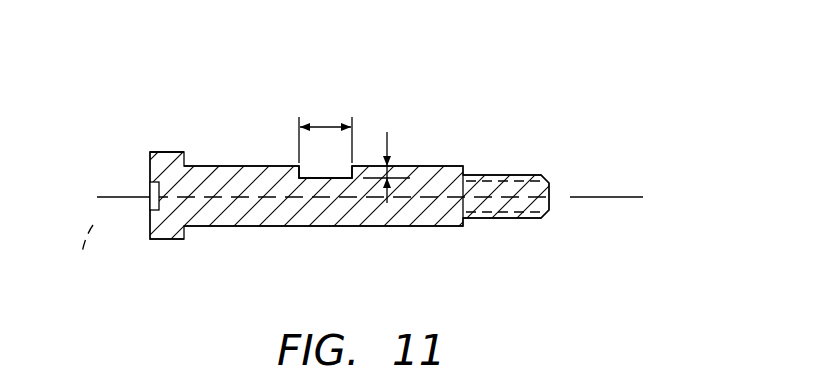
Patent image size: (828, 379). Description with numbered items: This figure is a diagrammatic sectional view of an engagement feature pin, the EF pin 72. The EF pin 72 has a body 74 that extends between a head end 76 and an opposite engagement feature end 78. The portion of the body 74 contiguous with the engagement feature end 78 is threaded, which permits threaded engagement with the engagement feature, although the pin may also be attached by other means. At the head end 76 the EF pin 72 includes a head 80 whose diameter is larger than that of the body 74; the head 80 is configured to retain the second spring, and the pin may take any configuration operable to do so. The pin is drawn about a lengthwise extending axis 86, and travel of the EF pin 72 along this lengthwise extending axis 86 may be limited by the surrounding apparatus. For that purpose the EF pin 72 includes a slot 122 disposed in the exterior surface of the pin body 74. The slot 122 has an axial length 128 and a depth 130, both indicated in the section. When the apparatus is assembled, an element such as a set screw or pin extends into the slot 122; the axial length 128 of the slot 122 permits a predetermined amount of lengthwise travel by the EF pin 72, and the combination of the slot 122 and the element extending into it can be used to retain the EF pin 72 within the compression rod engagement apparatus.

The EF pin 72 is at (197, 262).
The body 74 is at (313, 227).
The head end 76 is at (134, 235).
The engagement feature end 78 is at (575, 218).
The head 80 is at (160, 160).
The lengthwise extending axis 86 is at (80, 256).
The slot 122 is at (313, 178).
The axial length 128 is at (323, 122).
The depth 130 is at (387, 132).